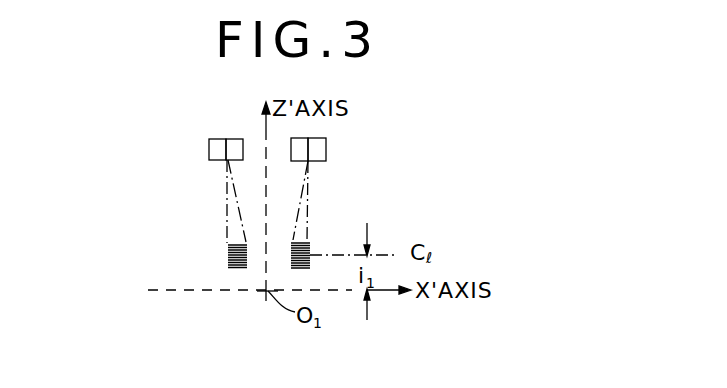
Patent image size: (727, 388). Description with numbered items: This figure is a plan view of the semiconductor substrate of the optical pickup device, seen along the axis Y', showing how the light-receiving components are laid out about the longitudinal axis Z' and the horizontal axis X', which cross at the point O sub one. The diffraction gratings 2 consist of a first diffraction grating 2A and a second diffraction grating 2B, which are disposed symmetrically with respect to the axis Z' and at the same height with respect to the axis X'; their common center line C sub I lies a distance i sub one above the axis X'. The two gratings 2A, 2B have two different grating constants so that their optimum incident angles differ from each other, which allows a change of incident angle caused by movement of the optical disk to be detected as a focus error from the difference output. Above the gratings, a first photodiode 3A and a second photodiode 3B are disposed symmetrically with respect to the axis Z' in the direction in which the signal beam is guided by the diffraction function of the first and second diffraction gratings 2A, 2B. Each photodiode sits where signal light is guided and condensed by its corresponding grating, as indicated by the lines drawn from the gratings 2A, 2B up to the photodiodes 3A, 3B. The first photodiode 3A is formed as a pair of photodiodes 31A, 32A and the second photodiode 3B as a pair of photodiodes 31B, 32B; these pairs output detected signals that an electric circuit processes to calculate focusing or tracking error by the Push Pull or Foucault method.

The diffraction gratings 2 is at (234, 305).
The first diffraction grating 2A is at (233, 268).
The second diffraction grating 2B is at (290, 260).
The first photodiode 3A is at (160, 140).
The second photodiode 3B is at (375, 142).
The photodiode 31A is at (209, 150).
The photodiode 32A is at (233, 139).
The photodiode 31B is at (302, 138).
The photodiode 32B is at (326, 148).